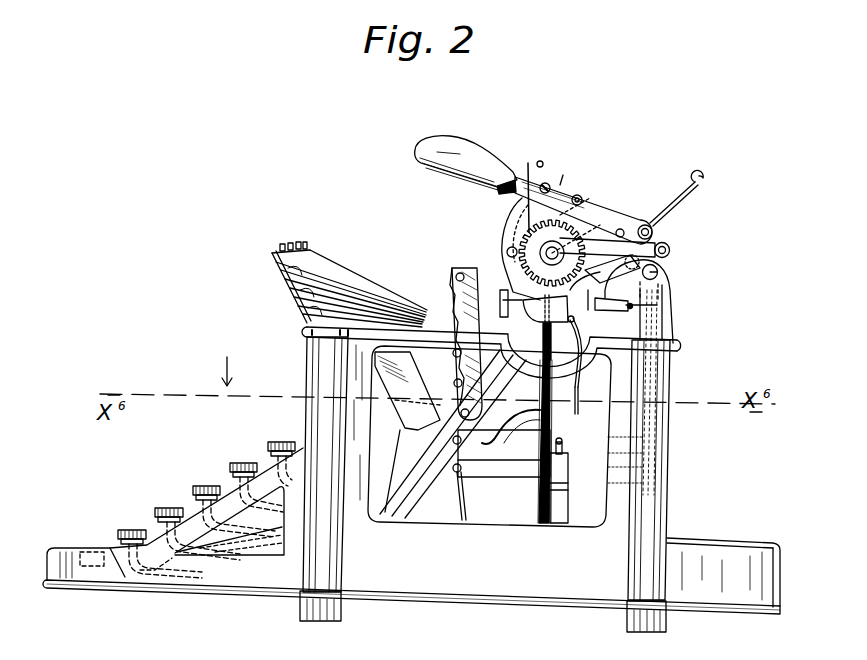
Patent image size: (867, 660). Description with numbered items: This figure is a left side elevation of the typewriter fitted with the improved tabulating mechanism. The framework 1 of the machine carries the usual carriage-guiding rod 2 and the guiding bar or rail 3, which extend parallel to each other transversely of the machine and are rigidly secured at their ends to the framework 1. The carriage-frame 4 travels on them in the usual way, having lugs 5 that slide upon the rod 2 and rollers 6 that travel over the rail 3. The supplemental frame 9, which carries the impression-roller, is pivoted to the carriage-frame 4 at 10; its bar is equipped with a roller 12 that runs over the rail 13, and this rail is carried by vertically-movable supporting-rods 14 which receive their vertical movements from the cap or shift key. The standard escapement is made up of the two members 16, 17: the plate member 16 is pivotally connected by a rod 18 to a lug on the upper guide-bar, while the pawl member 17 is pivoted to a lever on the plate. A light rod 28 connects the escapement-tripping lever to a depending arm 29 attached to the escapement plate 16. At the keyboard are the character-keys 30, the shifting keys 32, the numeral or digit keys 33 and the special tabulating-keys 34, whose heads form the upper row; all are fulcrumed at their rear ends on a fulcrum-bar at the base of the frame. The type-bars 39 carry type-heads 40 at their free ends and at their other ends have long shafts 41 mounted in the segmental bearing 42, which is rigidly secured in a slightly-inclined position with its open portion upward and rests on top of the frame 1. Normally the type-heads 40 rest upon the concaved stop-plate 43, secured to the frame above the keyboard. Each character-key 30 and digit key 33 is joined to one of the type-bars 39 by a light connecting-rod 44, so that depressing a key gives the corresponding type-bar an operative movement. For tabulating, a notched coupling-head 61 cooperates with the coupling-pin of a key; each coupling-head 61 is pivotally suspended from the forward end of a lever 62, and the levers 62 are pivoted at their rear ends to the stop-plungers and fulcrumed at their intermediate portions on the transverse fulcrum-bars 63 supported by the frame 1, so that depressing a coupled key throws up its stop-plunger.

The framework 1 is at (608, 509).
The carriage-guiding rod 2 is at (663, 277).
The guiding bar or rail 3 is at (520, 290).
The carriage-frame 4 is at (606, 277).
The lugs 5 is at (659, 270).
The rollers 6 is at (508, 268).
The supplemental frame 9 is at (603, 247).
The pivot of supplemental frame 10 is at (670, 249).
The roller 12 is at (540, 329).
The rail 13 is at (544, 341).
The supporting-rods 14 is at (542, 392).
The escapement member (plate) 16 is at (597, 291).
The escapement member (pawl) 17 is at (620, 309).
The rod 18 is at (639, 295).
The rod 28 is at (579, 410).
The depending arm 29 is at (574, 319).
The character-keys 30 is at (178, 491).
The shifting keys 32 is at (157, 541).
The numeral or digit keys 33 is at (242, 462).
The special tabulating-keys 34 is at (279, 441).
The type-bars 39 is at (364, 308).
The type-heads 40 is at (290, 242).
The shafts 41 is at (457, 280).
The segmental bearing 42 is at (416, 397).
The concaved stop-plate 43 is at (288, 286).
The connecting-rod 44 is at (416, 463).
The coupling-head 61 is at (466, 518).
The levers 62 is at (489, 440).
The fulcrum-bars 63 is at (564, 443).